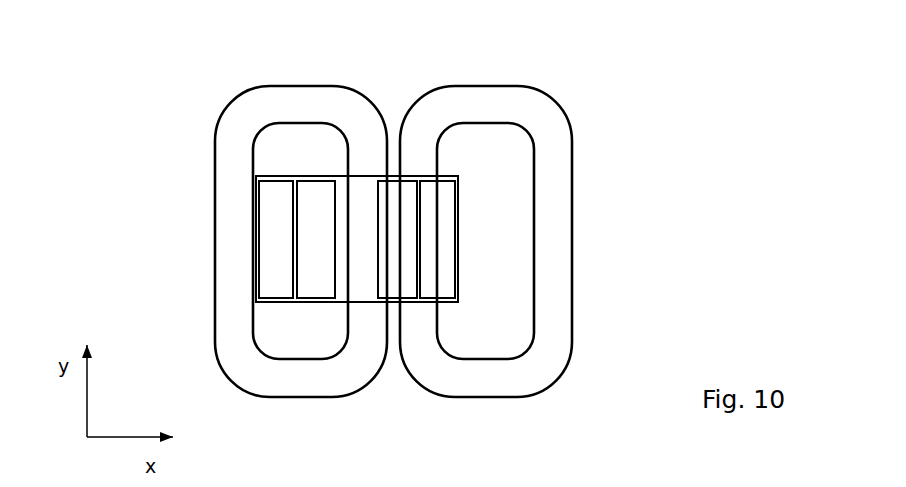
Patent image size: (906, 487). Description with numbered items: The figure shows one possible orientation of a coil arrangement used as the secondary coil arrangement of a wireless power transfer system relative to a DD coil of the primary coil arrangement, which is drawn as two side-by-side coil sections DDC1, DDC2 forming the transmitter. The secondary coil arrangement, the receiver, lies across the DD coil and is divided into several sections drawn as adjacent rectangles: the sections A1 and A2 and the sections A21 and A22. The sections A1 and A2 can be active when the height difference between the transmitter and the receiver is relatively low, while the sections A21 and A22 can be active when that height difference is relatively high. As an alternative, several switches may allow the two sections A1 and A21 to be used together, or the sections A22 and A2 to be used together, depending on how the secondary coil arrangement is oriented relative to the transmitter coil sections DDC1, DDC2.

The coil section DDC1 is at (282, 86).
The coil section DDC2 is at (493, 86).
The section A1 is at (272, 298).
The section A21 is at (320, 298).
The section A22 is at (382, 298).
The section A2 is at (430, 298).